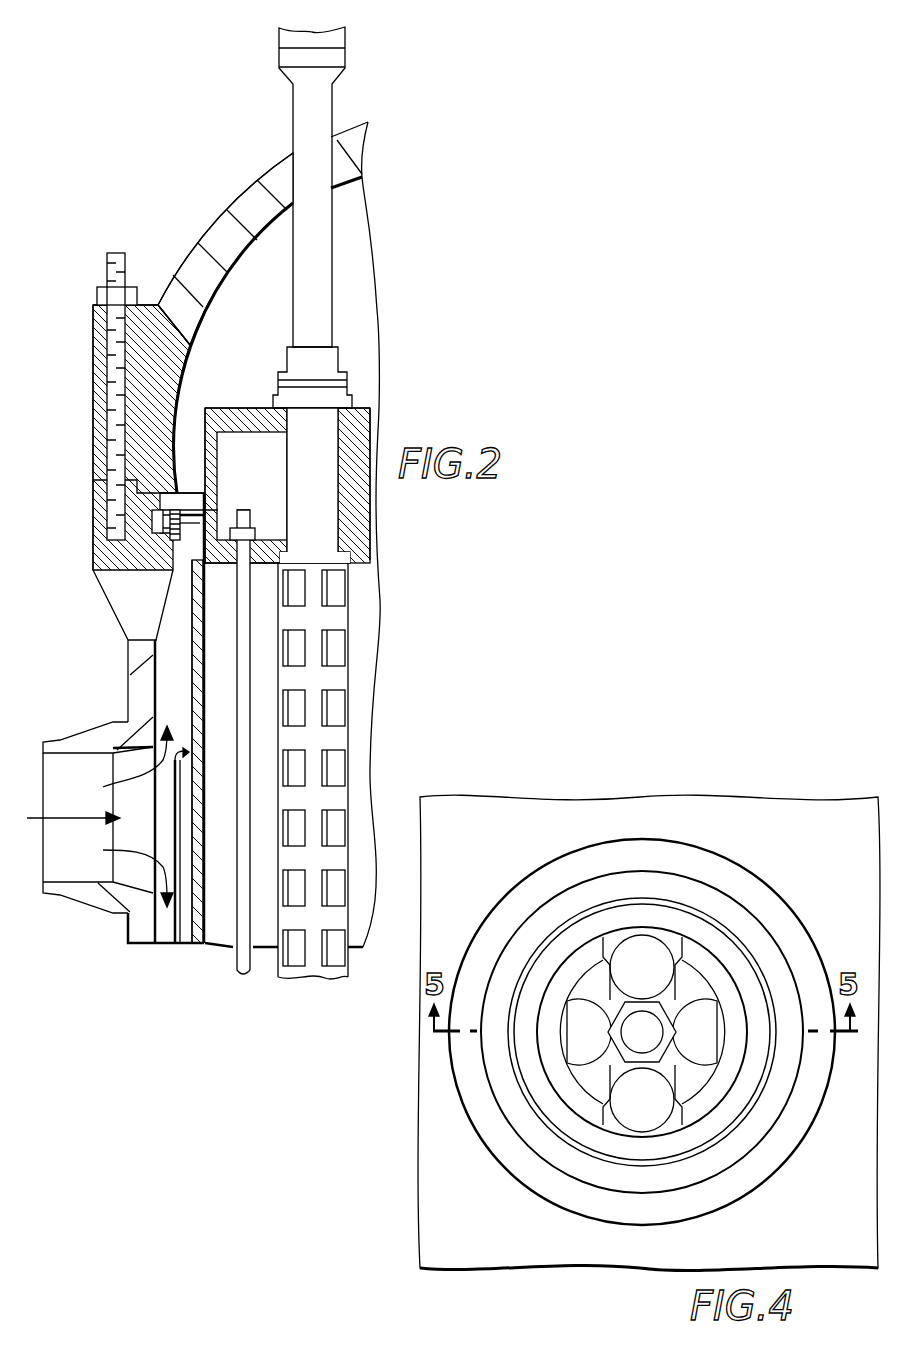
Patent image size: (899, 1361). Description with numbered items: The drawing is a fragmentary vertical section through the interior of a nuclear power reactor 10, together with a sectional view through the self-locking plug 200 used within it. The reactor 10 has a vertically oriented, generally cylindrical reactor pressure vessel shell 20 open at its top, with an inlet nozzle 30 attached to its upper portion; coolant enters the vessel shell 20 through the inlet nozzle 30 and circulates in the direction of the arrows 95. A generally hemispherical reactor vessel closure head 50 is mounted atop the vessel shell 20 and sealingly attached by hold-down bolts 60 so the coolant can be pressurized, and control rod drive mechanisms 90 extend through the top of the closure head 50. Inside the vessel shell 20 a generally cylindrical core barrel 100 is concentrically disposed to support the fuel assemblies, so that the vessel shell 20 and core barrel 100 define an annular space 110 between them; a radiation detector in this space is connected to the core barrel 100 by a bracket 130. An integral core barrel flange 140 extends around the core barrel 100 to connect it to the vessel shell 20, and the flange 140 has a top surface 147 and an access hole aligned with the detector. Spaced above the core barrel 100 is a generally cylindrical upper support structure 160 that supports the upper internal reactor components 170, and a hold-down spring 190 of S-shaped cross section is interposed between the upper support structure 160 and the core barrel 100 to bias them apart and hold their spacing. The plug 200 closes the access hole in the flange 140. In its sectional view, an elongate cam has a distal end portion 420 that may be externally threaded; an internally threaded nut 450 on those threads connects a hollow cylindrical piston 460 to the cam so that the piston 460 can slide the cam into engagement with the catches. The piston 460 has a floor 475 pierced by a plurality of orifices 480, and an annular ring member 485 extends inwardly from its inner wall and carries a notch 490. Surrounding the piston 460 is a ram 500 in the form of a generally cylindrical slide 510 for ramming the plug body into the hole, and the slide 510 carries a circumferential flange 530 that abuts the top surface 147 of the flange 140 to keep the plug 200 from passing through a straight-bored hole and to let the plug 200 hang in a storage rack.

In FIG. 2, the nuclear power reactor 10 is at (126, 168).
In FIG. 2, the reactor pressure vessel shell 20 is at (127, 660).
In FIG. 2, the inlet nozzle 30 is at (97, 902).
In FIG. 2, the reactor vessel closure head 50 is at (240, 200).
In FIG. 2, the hold-down bolts 60 is at (112, 253).
In FIG. 2, the control rod drive mechanisms 90 is at (343, 78).
In FIG. 2, the arrows 95 is at (78, 798).
In FIG. 2, the core barrel 100 is at (195, 623).
In FIG. 2, the annular space 110 is at (150, 686).
In FIG. 2, the bracket 130 is at (173, 923).
In FIG. 2, the core barrel flange 140 is at (168, 530).
In FIG. 4, the top surface 147 is at (693, 800).
In FIG. 2, the upper support structure 160 is at (240, 416).
In FIG. 2, the upper internal reactor components 170 is at (352, 300).
In FIG. 2, the hold-down spring 190 is at (205, 513).
In FIG. 2, the self-locking plug 200 is at (157, 510).
In FIG. 4, the self-locking plug 200 is at (503, 886).
In FIG. 4, the distal end portion 420 is at (643, 1040).
In FIG. 4, the internally threaded nut 450 is at (607, 1000).
In FIG. 4, the piston 460 is at (748, 1095).
In FIG. 4, the floor 475 is at (687, 993).
In FIG. 4, the orifices 480 is at (665, 928).
In FIG. 4, the annular ring member 485 is at (698, 1108).
In FIG. 4, the notch 490 is at (640, 947).
In FIG. 4, the ram 500 is at (525, 1113).
In FIG. 4, the slide 510 is at (548, 1142).
In FIG. 4, the flange 530 is at (580, 1195).